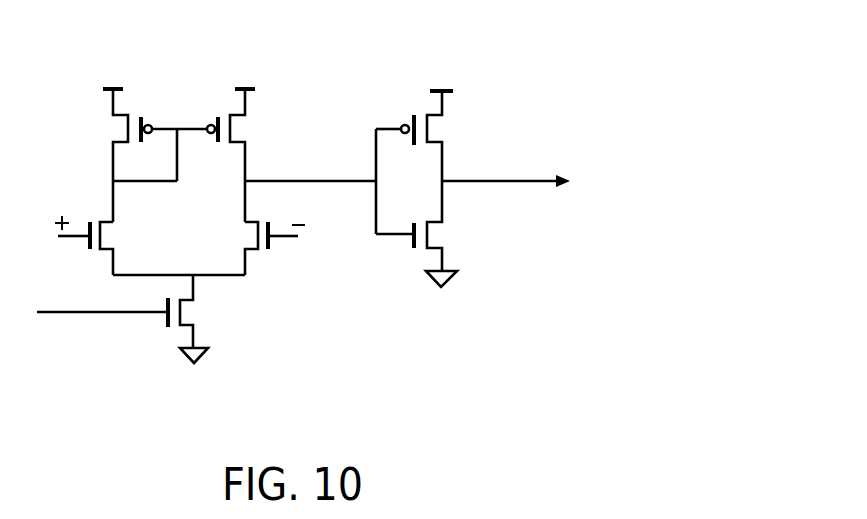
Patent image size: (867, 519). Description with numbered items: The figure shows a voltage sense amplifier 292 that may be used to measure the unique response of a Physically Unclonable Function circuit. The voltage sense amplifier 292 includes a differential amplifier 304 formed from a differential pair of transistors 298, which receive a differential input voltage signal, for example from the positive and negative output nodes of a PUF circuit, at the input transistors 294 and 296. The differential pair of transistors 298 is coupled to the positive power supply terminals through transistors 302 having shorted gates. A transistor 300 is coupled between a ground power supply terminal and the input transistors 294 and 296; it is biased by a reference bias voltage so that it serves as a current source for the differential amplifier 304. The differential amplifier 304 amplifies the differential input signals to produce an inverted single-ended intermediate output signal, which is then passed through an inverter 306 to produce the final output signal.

The voltage sense amplifier 292 is at (495, 47).
The input transistor 294 is at (74, 232).
The input transistor 296 is at (283, 240).
The differential pair of transistors 298 is at (252, 233).
The transistor 300 is at (167, 320).
The transistors having shorted gates 302 is at (208, 126).
The differential amplifier 304 is at (268, 372).
The inverter 306 is at (467, 344).